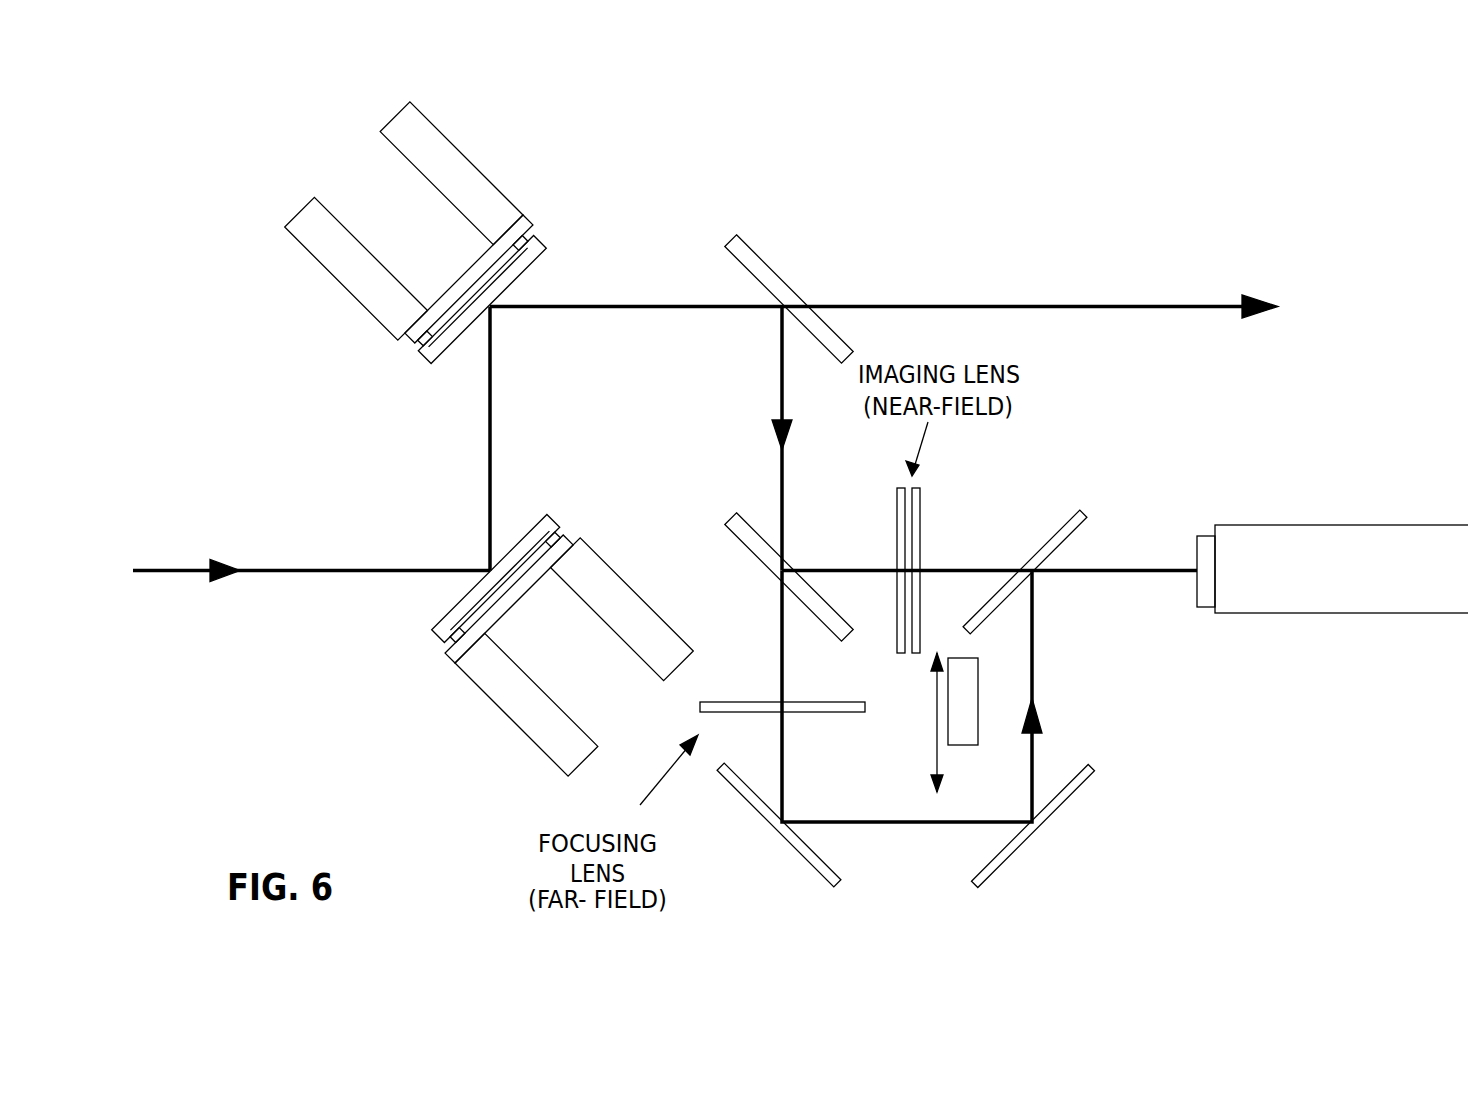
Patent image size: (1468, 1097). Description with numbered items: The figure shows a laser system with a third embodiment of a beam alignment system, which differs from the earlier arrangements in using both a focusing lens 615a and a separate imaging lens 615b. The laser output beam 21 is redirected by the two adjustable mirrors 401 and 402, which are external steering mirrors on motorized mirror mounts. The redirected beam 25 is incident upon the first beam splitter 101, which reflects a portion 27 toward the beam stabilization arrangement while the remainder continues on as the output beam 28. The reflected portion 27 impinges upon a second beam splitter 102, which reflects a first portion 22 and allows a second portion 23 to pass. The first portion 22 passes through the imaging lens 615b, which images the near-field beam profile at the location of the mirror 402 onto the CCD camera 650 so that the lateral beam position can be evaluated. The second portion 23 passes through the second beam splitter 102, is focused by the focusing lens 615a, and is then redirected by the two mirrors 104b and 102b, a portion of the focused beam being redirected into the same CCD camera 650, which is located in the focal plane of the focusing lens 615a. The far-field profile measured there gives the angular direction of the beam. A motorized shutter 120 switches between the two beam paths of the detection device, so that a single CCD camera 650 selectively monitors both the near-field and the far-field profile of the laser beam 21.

The laser output beam 21 is at (322, 570).
The redirected beam 25 is at (648, 305).
The output beam 28 is at (996, 305).
The reflected portion 27 is at (780, 375).
The first portion 22 is at (822, 567).
The second portion 23 is at (780, 607).
The first beam splitter 101 is at (775, 284).
The second beam splitter 102 is at (726, 523).
The mirror 104b is at (1075, 512).
The mirror 102b is at (1093, 772).
The adjustable mirror 401 is at (533, 522).
The adjustable mirror 402 is at (528, 272).
The focusing lens 615a is at (730, 702).
The imaging lens 615b is at (966, 657).
The motorized shutter 120 is at (935, 730).
The CCD camera 650 is at (1362, 524).